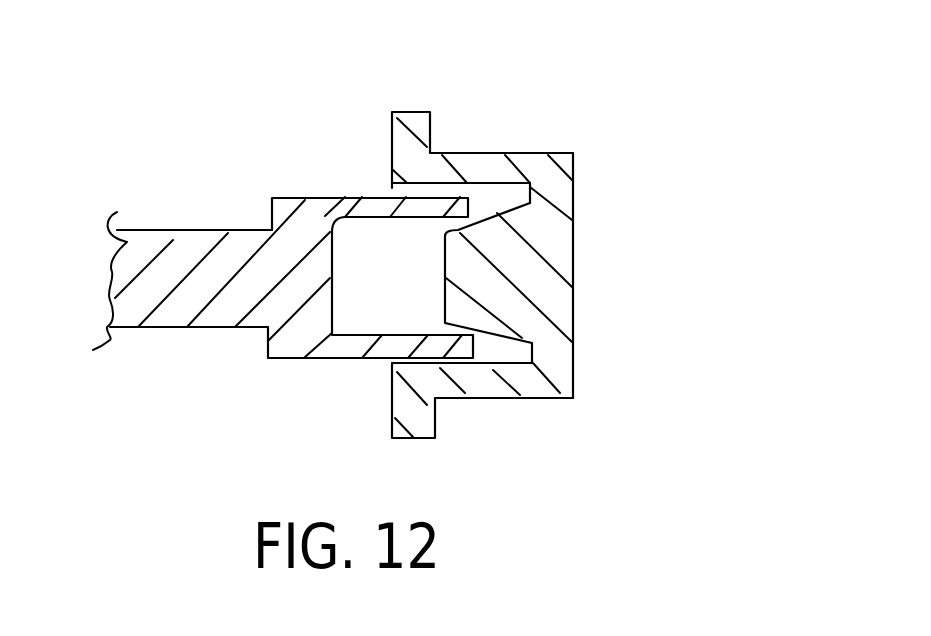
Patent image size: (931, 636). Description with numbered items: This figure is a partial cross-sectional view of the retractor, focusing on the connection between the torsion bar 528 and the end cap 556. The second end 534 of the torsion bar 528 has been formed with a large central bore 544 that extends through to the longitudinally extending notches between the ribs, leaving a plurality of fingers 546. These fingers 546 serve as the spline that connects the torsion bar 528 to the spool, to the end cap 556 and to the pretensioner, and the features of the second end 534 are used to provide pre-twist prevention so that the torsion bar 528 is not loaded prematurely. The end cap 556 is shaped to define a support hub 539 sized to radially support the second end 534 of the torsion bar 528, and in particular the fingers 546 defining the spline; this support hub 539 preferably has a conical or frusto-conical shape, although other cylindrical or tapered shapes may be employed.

The torsion bar 528 is at (153, 273).
The second end 534 is at (287, 237).
The central bore 544 is at (423, 299).
The fingers 546 is at (355, 347).
The end cap 556 is at (493, 168).
The plug body / insert 539 is at (483, 278).